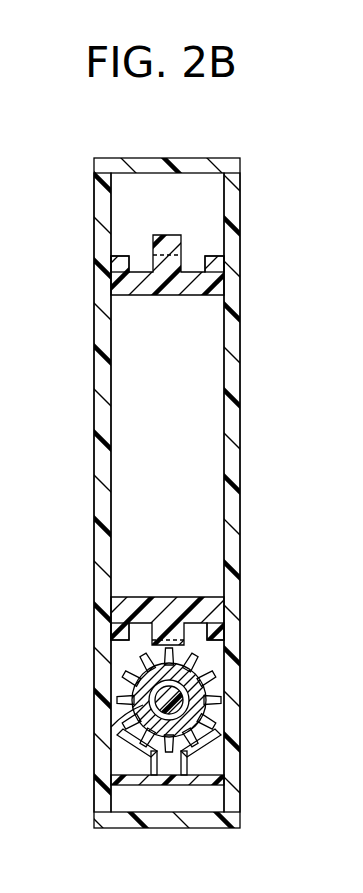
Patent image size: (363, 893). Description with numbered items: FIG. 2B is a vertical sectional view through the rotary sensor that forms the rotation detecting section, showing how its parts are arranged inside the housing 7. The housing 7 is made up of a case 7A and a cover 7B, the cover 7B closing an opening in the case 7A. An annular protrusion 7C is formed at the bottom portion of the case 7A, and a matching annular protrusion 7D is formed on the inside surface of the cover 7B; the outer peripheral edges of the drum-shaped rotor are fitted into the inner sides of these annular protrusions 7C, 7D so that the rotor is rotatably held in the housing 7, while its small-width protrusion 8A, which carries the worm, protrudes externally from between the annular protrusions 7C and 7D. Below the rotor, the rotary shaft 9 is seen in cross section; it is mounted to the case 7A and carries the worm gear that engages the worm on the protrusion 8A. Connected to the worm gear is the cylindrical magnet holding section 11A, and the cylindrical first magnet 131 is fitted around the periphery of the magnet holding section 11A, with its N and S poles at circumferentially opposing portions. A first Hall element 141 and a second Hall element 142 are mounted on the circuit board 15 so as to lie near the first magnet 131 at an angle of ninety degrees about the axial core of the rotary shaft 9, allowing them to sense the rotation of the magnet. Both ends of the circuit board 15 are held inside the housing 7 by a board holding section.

The housing 7 is at (247, 390).
The case 7A is at (232, 686).
The cover 7B is at (112, 677).
The annular protrusion 7C is at (208, 262).
The annular protrusion 7D is at (125, 262).
The small-width protrusion 8A is at (172, 262).
The rotary shaft 9 is at (120, 755).
The magnet holding section 11A is at (190, 712).
The first magnet 131 is at (128, 720).
The first Hall element 141 is at (128, 775).
The second Hall element 142 is at (218, 762).
The circuit board 15 is at (193, 783).